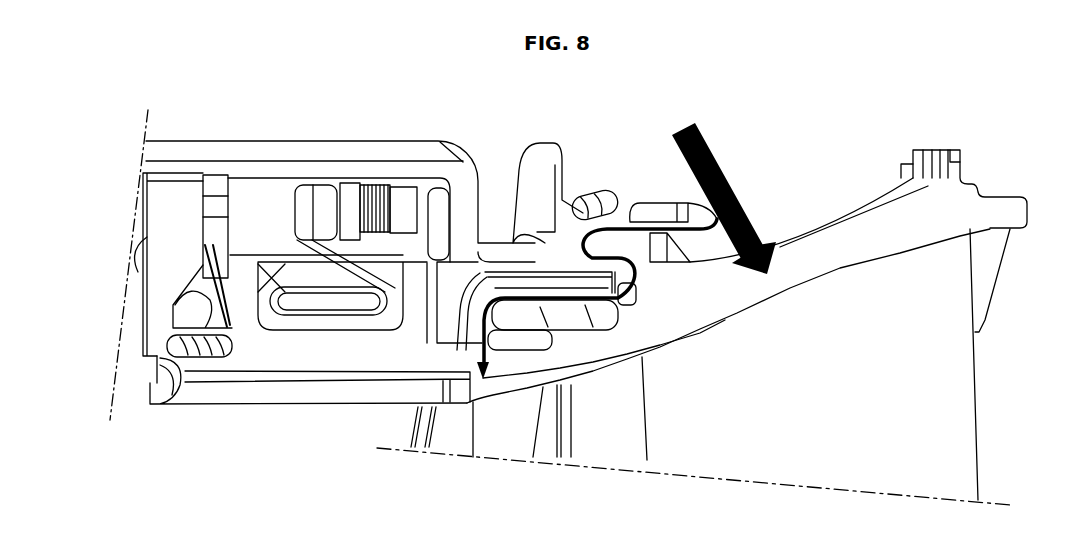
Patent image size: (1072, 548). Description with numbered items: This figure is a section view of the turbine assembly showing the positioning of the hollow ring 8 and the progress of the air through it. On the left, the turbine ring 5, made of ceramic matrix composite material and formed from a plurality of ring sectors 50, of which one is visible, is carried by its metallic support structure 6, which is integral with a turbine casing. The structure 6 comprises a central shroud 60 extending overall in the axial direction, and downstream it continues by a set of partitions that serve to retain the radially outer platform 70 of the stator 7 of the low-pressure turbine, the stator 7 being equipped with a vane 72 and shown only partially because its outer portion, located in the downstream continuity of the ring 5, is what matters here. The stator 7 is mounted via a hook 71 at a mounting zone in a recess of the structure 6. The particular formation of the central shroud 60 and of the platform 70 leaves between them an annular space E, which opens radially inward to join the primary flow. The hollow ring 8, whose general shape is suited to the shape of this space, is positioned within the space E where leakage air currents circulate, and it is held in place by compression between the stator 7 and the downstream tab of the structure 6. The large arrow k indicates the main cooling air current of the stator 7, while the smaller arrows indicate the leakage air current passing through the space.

The support structure 6 is at (316, 122).
The central shroud 60 is at (235, 148).
The hollow ring 8 is at (549, 268).
The hook 71 is at (627, 250).
The main cooling air current arrow k is at (724, 198).
The stator 7 is at (991, 184).
The vane 72 is at (710, 364).
The radially outer platform 70 is at (592, 363).
The annular space E is at (505, 320).
The turbine ring 5 is at (307, 392).
The ring sector 50 is at (218, 390).